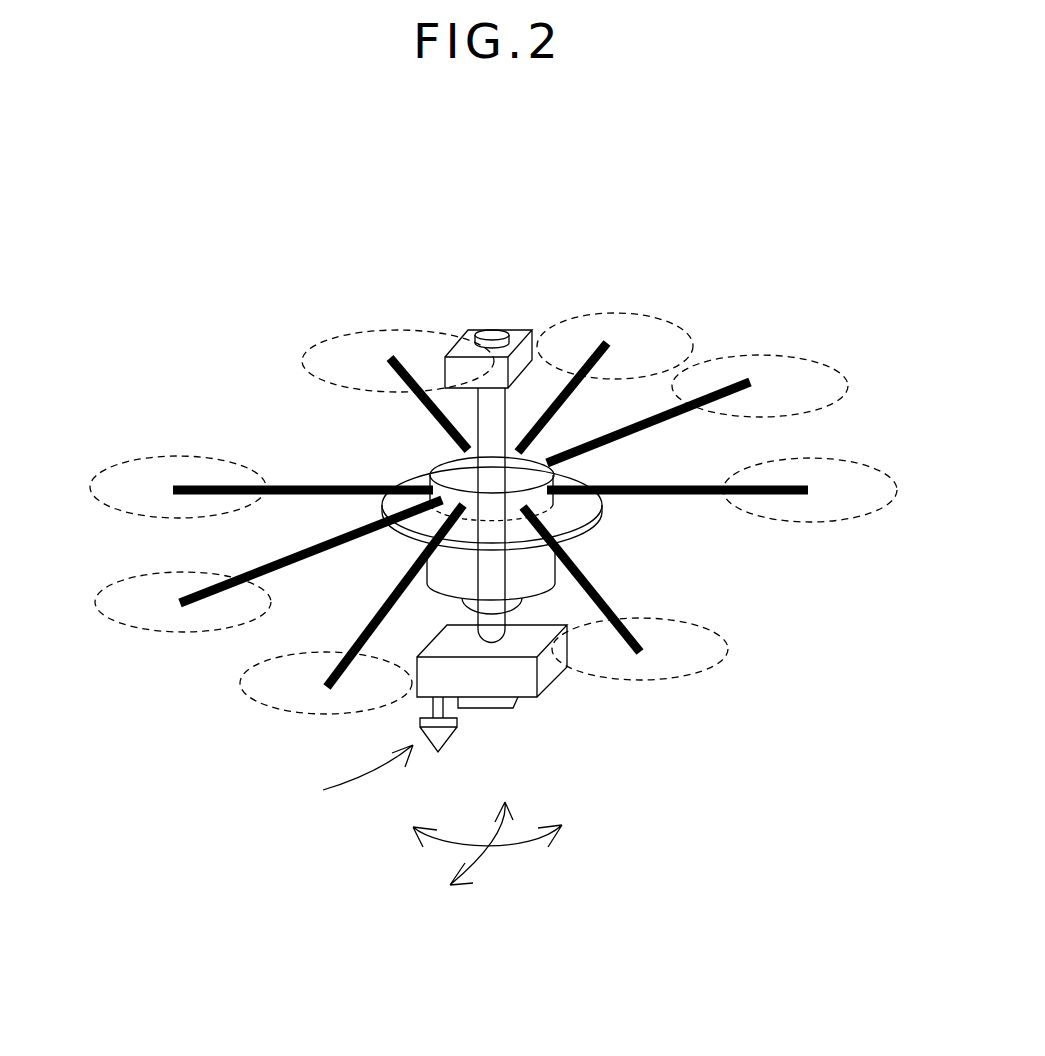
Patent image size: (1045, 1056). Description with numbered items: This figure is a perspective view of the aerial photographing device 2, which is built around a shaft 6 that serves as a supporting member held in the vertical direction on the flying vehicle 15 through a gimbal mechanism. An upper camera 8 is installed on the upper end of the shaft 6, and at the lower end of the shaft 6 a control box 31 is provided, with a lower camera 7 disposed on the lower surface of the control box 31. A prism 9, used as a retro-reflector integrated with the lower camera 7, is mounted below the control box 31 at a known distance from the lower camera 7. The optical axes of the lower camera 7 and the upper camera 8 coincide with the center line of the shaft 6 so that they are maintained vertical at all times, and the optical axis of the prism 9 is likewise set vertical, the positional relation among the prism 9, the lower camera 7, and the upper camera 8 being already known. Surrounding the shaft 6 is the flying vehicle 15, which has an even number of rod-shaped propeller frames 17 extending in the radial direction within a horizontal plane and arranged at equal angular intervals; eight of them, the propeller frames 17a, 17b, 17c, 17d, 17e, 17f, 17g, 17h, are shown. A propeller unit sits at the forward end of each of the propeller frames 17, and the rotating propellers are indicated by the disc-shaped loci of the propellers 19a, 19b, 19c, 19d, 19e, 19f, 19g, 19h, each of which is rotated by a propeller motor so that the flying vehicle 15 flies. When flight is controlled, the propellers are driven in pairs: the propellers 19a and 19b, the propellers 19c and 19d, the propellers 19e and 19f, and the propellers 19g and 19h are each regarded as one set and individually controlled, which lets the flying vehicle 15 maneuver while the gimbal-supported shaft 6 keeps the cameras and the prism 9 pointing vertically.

The aerial photographing device 2 is at (491, 131).
The shaft 6 is at (507, 420).
The upper camera 8 is at (494, 330).
The flying vehicle 15 is at (405, 468).
The propeller frames 17 is at (640, 486).
The propeller frame 17a is at (215, 487).
The propeller frame 17b is at (400, 366).
The propeller frame 17c is at (577, 380).
The propeller frame 17d is at (716, 390).
The propeller frame 17e is at (695, 497).
The propeller frame 17f is at (642, 643).
The propeller frame 17g is at (398, 596).
The propeller frame 17h is at (213, 594).
The propeller 19a is at (167, 456).
The propeller 19b is at (330, 337).
The propeller 19c is at (622, 313).
The propeller 19d is at (778, 356).
The propeller 19e is at (810, 522).
The propeller 19f is at (697, 676).
The propeller 19g is at (296, 713).
The propeller 19h is at (162, 633).
The lower camera 7 is at (493, 710).
The control box 31 is at (553, 683).
The prism 9 is at (438, 752).